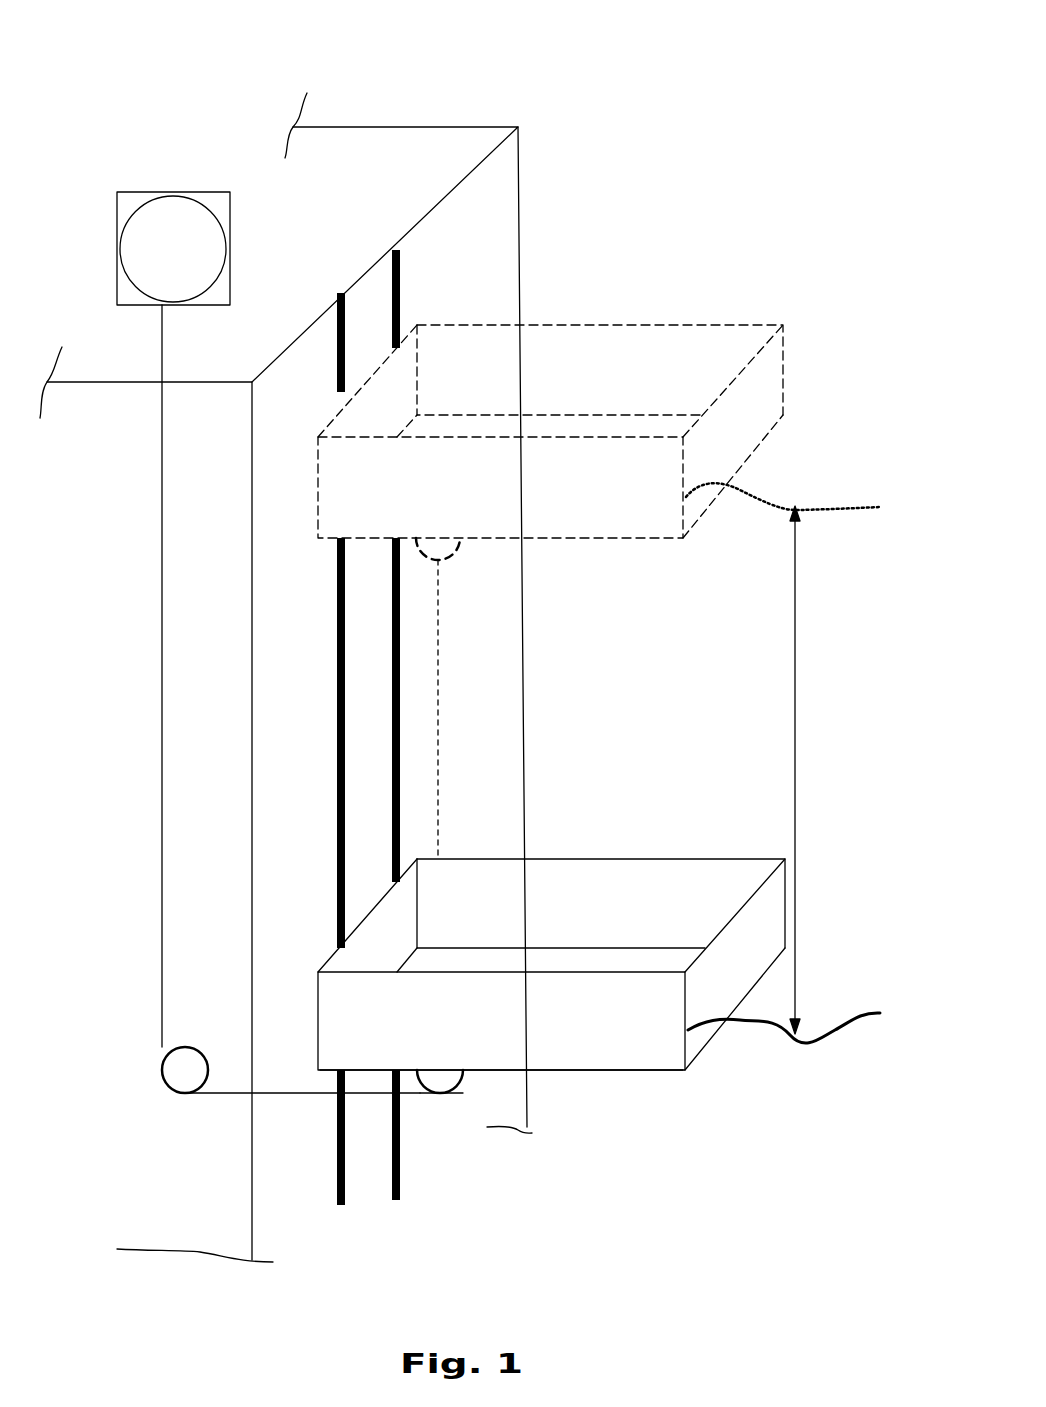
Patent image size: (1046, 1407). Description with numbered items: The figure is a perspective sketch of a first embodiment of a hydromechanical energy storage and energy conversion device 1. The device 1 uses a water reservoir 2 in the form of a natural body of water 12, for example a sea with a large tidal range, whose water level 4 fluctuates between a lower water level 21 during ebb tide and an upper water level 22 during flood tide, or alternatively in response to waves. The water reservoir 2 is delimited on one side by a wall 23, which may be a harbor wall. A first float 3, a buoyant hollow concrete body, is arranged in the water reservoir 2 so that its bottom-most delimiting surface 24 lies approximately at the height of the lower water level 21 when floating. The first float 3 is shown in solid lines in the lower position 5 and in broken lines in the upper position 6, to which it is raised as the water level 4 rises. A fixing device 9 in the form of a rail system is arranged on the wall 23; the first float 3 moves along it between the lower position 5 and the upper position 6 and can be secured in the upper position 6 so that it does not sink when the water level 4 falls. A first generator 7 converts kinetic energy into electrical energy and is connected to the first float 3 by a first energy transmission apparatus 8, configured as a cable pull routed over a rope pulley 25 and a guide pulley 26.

The energy storage and energy conversion device 1 is at (160, 72).
The water reservoir 2 is at (769, 1194).
The first float 3 is at (604, 693).
The water level 4 is at (797, 700).
The lower position 5 is at (748, 961).
The upper position 6 is at (740, 427).
The first generator 7 is at (232, 250).
The first energy transmission apparatus 8 is at (162, 748).
The fixing device 9 is at (345, 358).
The natural body of water 12 is at (803, 1194).
The lower water level 21 is at (815, 1037).
The upper water level 22 is at (840, 511).
The wall 23 is at (520, 195).
The bottom-most delimiting surface 24 is at (612, 1072).
The rope pulley 25 is at (452, 562).
The guide pulley 26 is at (172, 1093).